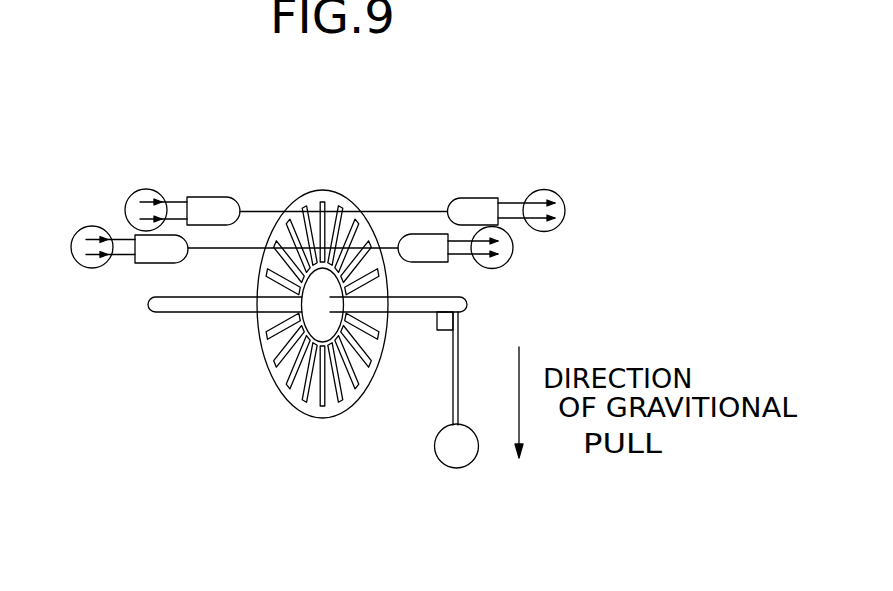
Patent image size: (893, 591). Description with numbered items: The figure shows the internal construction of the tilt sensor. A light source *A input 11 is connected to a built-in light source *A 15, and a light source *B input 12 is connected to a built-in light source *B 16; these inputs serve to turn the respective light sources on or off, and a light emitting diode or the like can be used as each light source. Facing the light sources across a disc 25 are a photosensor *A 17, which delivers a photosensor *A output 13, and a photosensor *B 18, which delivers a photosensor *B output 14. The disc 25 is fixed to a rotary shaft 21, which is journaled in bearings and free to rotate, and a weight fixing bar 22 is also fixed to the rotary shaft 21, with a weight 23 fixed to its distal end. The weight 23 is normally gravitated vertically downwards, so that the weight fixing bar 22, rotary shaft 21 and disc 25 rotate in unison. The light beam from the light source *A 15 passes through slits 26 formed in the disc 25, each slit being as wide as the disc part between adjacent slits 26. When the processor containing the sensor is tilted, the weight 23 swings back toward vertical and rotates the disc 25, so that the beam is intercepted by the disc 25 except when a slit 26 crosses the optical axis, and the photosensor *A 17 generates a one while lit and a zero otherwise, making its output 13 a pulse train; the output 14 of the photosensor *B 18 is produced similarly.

The light source *A input 11 is at (127, 200).
The light source *B input 12 is at (83, 267).
The photosensor *A output 13 is at (565, 200).
The photosensor *B output 14 is at (513, 250).
The light source *A 15 is at (208, 197).
The light source *B 16 is at (150, 263).
The photosensor *A 17 is at (476, 198).
The photosensor *B 18 is at (427, 263).
The rotary shaft 21 is at (465, 312).
The weight fixing bar 22 is at (452, 373).
The weight 23 is at (470, 463).
The disc 25 is at (319, 190).
The slits 26 is at (268, 357).